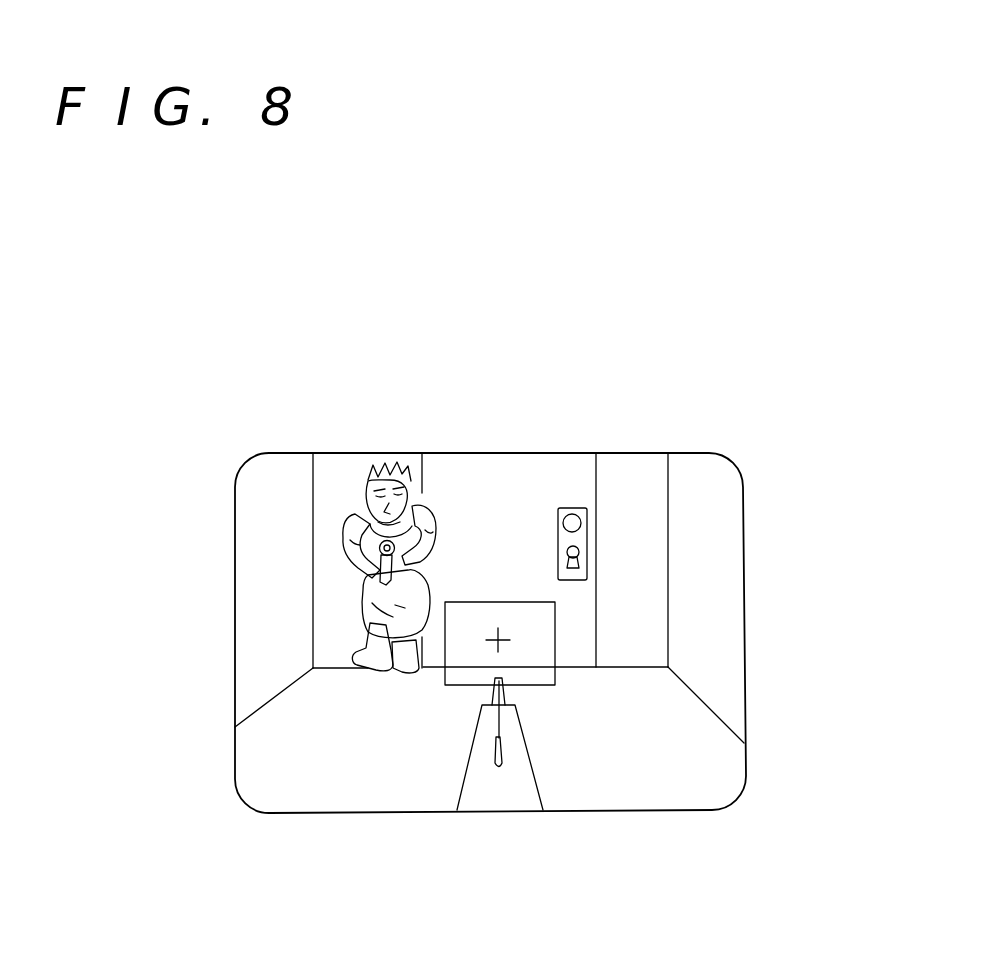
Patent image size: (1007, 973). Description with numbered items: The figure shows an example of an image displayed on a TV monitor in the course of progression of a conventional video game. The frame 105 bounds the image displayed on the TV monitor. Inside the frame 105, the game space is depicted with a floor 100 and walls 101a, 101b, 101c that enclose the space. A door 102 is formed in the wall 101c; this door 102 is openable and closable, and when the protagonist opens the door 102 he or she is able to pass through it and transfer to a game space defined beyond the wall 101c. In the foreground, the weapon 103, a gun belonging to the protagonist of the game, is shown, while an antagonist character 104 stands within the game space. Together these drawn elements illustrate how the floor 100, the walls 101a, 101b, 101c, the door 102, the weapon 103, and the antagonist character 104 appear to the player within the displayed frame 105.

The floor 100 is at (832, 723).
The wall 101a is at (818, 494).
The wall 101b is at (222, 352).
The wall 101c is at (627, 352).
The door 102 is at (443, 380).
The weapon (gun) 103 is at (597, 912).
The antagonist character 104 is at (88, 637).
The frame 105 is at (88, 817).